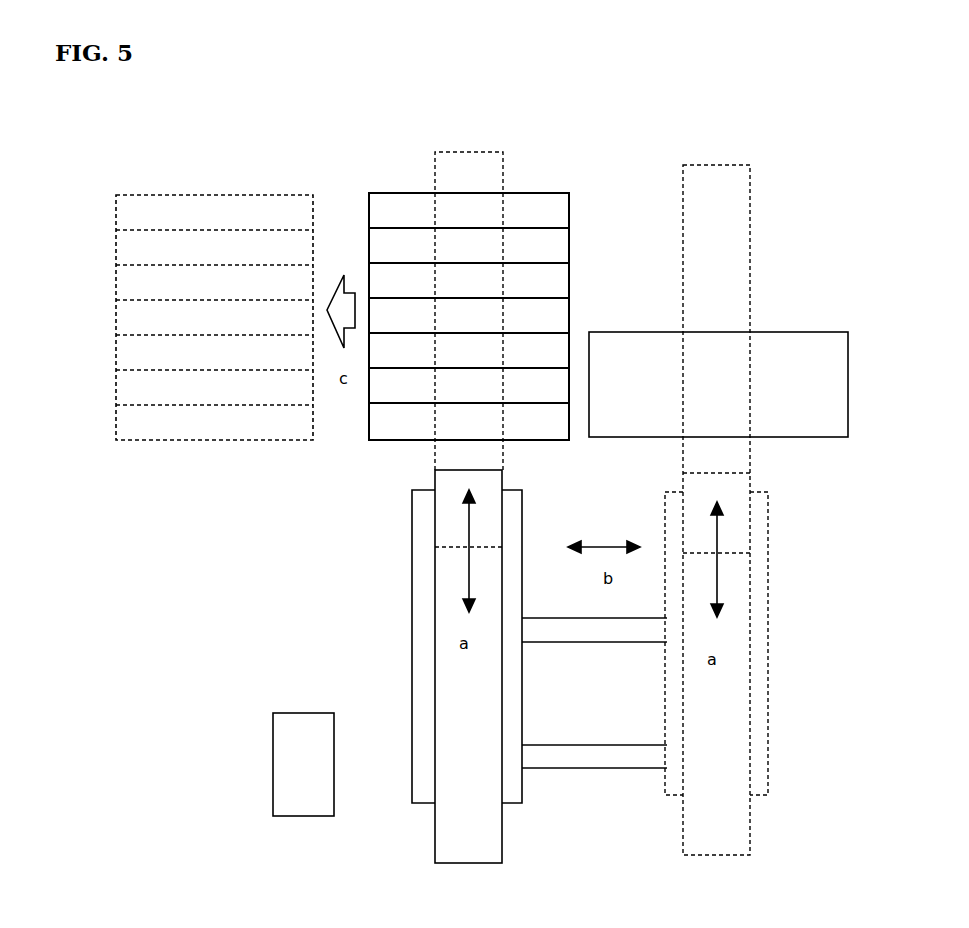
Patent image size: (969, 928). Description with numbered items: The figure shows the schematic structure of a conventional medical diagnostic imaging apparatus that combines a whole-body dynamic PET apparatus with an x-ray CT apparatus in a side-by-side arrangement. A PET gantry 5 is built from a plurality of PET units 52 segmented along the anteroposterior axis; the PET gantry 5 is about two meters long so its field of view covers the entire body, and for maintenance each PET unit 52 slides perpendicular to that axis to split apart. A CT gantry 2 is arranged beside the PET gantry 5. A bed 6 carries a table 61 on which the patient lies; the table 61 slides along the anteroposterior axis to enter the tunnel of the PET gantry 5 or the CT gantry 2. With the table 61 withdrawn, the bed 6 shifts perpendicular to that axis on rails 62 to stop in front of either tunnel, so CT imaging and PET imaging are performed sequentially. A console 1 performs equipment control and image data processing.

The console 1 is at (295, 778).
The CT gantry 2 is at (812, 346).
The PET gantry 5 is at (100, 197).
The PET unit 52 is at (558, 208).
The bed 6 is at (378, 676).
The table 61 is at (443, 838).
The rails 62 is at (608, 760).